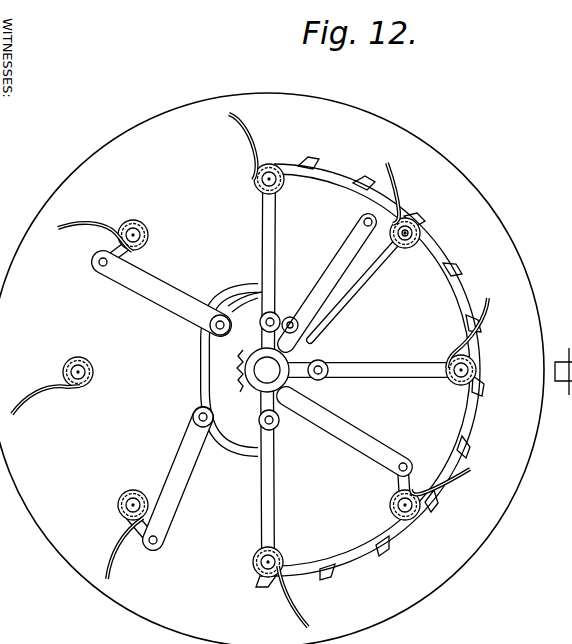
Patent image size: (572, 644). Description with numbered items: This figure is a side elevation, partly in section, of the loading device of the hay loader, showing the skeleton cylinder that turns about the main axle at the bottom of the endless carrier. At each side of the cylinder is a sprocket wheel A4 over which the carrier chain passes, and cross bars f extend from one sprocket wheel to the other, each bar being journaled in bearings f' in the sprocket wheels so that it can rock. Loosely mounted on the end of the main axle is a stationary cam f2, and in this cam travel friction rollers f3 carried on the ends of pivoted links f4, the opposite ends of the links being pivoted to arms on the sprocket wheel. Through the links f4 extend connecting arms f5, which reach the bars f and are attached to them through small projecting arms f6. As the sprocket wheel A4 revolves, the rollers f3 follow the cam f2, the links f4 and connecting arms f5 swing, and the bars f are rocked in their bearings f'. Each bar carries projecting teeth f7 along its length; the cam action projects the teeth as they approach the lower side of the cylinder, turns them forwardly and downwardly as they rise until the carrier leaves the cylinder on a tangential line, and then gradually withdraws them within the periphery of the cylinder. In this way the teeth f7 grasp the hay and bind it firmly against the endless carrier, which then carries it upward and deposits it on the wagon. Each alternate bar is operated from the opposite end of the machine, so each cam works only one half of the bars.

The cross bars f is at (269, 353).
The bearings f' is at (405, 262).
The stationary cam f2 is at (237, 421).
The friction rollers f3 is at (220, 320).
The pivoted links f4 is at (237, 294).
The connecting arms f5 is at (320, 267).
The small projecting arms f6 is at (80, 511).
The projecting teeth f7 is at (245, 127).
The sprocket wheels A4 is at (345, 568).